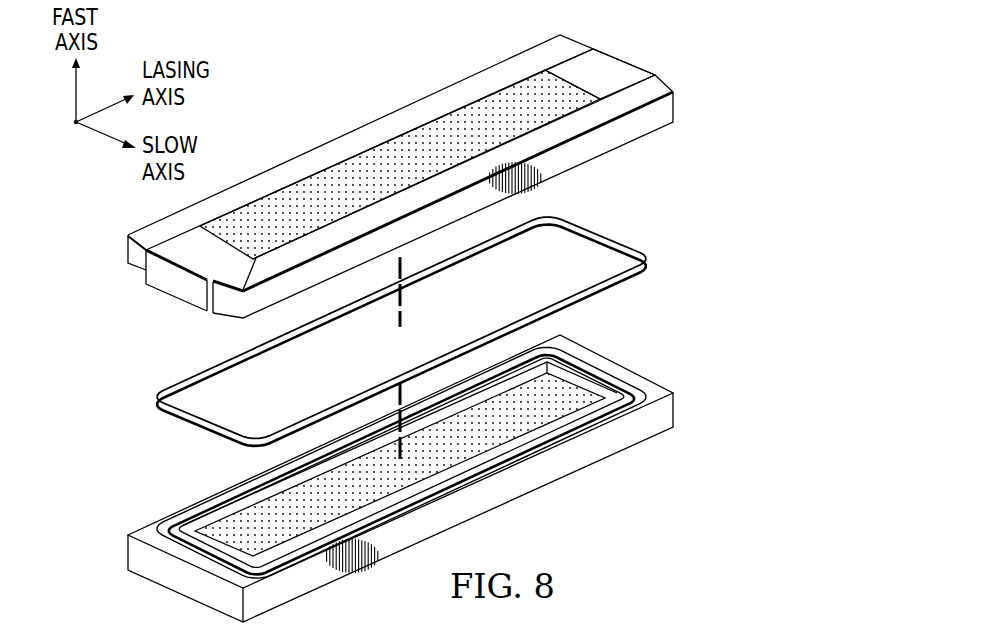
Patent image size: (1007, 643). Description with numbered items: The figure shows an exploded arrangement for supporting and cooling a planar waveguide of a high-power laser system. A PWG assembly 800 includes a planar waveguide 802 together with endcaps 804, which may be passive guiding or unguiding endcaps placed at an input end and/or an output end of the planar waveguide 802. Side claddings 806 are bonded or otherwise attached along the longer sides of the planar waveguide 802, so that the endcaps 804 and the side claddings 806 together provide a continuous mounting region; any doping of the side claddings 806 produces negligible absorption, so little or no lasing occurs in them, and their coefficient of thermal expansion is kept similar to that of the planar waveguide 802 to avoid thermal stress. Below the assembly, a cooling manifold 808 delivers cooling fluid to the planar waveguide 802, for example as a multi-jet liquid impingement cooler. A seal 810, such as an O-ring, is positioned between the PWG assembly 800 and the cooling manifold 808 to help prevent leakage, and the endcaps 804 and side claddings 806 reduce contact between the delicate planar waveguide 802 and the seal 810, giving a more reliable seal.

The PWG assembly 800 is at (317, 103).
The planar waveguide 802 is at (441, 117).
The endcaps 804 is at (623, 66).
The side claddings 806 is at (623, 137).
The cooling manifold 808 is at (630, 441).
The seal 810 is at (186, 378).